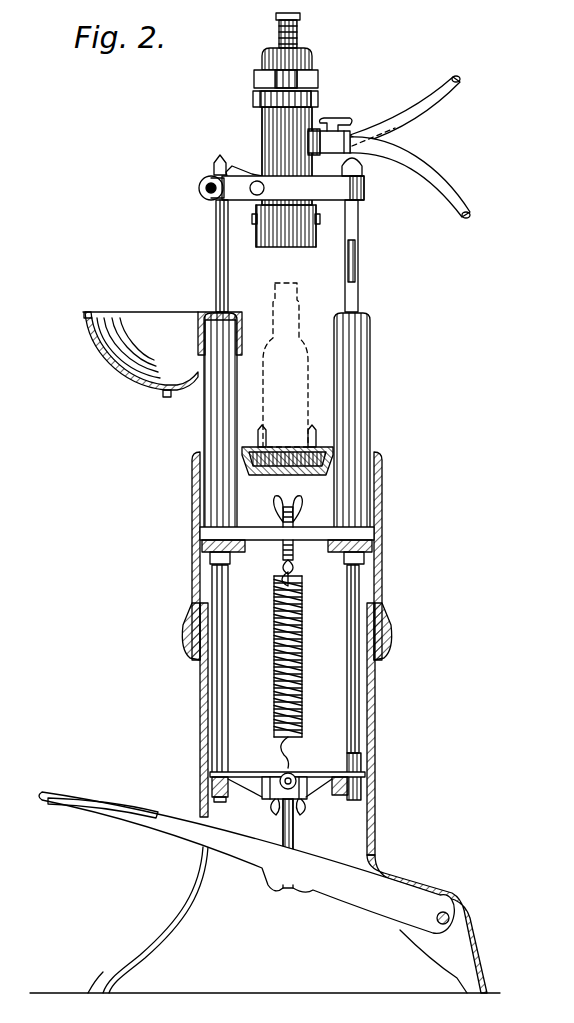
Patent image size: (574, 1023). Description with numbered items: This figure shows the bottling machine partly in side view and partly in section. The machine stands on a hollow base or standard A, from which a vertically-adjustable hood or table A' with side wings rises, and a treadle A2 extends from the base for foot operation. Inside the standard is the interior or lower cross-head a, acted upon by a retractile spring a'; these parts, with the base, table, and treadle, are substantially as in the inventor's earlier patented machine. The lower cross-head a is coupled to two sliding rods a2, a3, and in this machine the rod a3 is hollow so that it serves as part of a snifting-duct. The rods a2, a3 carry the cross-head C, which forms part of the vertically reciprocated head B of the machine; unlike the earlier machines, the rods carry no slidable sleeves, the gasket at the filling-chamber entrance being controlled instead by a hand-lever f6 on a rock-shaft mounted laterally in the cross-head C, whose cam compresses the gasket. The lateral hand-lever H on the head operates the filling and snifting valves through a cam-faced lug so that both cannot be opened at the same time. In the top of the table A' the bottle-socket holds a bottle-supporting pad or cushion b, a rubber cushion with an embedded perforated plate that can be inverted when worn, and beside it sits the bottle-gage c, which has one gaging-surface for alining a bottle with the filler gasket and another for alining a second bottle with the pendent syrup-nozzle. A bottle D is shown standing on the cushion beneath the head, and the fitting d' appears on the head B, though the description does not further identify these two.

The head B is at (302, 109).
The hex nut d' is at (278, 74).
The lateral hand-lever H is at (246, 165).
The hand-lever f6 is at (200, 188).
The cross-head C is at (360, 190).
The sliding rod a2 is at (222, 700).
The sliding rod a3 is at (358, 240).
The bottle D is at (285, 365).
The bottle-gage c is at (258, 440).
The bottle-supporting pad or cushion b is at (298, 450).
The vertically-adjustable hood or table A' is at (303, 653).
The retractile spring a' is at (303, 670).
The interior or lower cross-head a is at (287, 815).
The hollow base or standard A is at (265, 866).
The treadle A2 is at (110, 795).